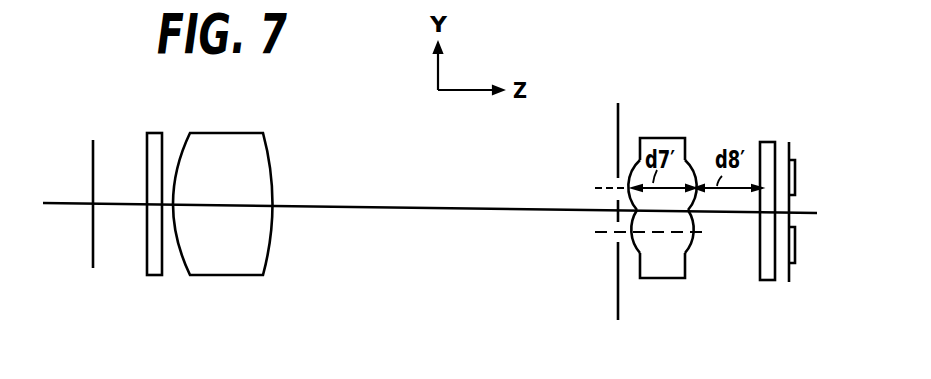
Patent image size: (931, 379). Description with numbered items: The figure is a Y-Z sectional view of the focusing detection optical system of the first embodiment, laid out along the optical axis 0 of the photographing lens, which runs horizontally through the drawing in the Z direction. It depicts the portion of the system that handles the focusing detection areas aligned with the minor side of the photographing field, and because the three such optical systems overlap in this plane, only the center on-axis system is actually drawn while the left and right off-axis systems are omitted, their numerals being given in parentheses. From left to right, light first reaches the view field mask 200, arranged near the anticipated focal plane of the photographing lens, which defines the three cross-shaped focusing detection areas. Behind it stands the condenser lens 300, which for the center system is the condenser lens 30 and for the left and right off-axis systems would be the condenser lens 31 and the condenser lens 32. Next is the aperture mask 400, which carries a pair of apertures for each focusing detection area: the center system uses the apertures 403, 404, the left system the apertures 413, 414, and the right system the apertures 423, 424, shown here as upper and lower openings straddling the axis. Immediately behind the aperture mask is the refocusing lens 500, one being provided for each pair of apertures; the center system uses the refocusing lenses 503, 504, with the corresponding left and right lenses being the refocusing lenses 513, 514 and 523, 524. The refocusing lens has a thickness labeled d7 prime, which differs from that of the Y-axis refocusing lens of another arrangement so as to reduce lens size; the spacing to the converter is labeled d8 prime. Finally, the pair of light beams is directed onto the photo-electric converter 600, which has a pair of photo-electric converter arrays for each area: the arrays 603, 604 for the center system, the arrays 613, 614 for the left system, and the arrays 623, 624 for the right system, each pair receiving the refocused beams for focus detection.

The optical axis 0 is at (418, 206).
The view field mask 200 is at (93, 256).
The condenser lens 300 is at (246, 219).
The condenser lens 30 is at (246, 195).
The condenser lens 31 is at (246, 195).
The condenser lens 32 is at (197, 294).
The aperture mask 400 is at (631, 227).
The aperture 403 is at (590, 143).
The aperture 413 is at (590, 143).
The aperture 423 is at (612, 186).
The aperture 404 is at (631, 278).
The aperture 414 is at (631, 279).
The aperture 424 is at (610, 232).
The refocusing lens 500 is at (690, 200).
The refocusing lens 503 is at (690, 142).
The refocusing lens 513 is at (690, 142).
The refocusing lens 523 is at (691, 168).
The refocusing lens 504 is at (692, 268).
The refocusing lens 514 is at (692, 268).
The refocusing lens 524 is at (696, 243).
The photo-electric converter 600 is at (809, 224).
The photo-electric converter array 603 is at (823, 166).
The photo-electric converter array 613 is at (823, 160).
The photo-electric converter array 623 is at (796, 186).
The photo-electric converter array 604 is at (823, 259).
The photo-electric converter array 614 is at (823, 263).
The photo-electric converter array 624 is at (812, 231).